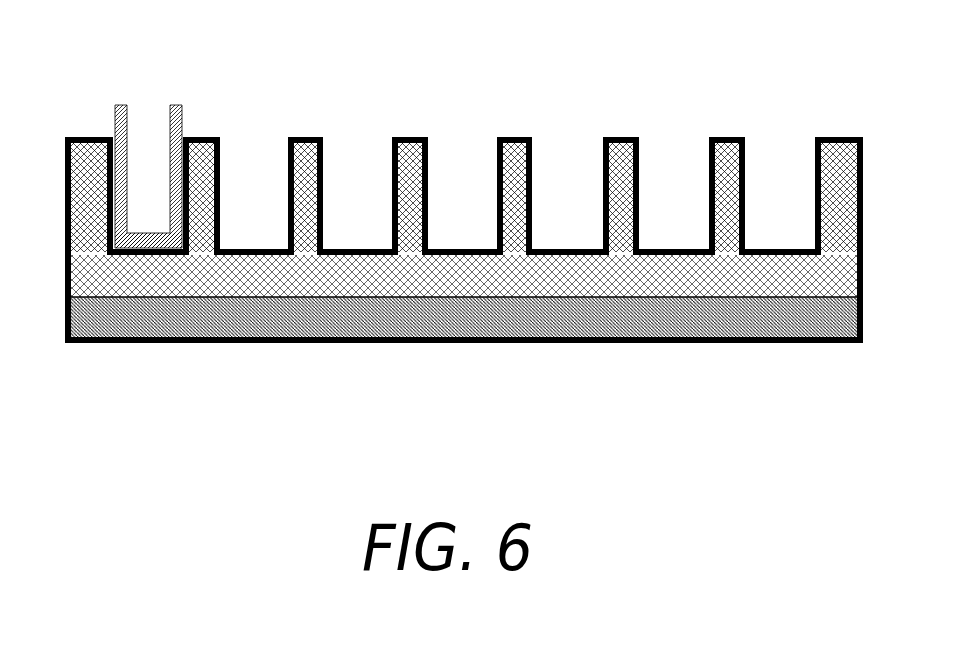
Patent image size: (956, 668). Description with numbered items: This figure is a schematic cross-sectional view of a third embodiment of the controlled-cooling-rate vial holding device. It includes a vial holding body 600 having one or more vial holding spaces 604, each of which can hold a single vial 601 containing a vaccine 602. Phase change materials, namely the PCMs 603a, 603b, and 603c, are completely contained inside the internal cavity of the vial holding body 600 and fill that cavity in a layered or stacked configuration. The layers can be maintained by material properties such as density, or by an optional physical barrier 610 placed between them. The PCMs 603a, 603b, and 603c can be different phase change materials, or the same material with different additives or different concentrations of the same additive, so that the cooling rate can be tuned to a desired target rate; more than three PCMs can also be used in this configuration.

The vial holding body 600 is at (838, 138).
The vial 601 is at (160, 132).
The vaccine 602 is at (147, 238).
The PCM 603a is at (305, 183).
The PCM 603b is at (417, 272).
The PCM 603c is at (217, 317).
The vial holding space 604 is at (780, 238).
The physical barrier 610 is at (147, 298).